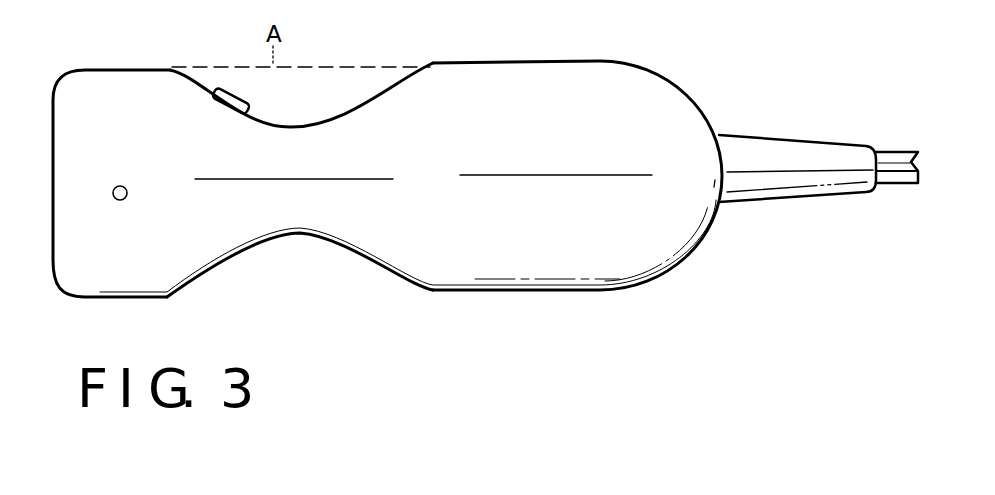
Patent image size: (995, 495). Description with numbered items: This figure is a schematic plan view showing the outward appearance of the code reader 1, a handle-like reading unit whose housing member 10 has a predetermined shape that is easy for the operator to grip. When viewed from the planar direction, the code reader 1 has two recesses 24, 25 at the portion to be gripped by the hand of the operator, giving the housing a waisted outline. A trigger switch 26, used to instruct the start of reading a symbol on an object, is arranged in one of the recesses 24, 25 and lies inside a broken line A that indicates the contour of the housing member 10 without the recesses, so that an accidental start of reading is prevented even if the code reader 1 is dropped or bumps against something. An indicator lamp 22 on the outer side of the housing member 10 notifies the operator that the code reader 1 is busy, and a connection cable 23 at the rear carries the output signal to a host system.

The code reader 1 is at (622, 300).
The housing member 10 is at (518, 63).
The indicator lamp 22 is at (126, 199).
The connection cable 23 is at (893, 157).
The recess 24 is at (355, 85).
The recess 25 is at (325, 252).
The trigger switch 26 is at (245, 100).